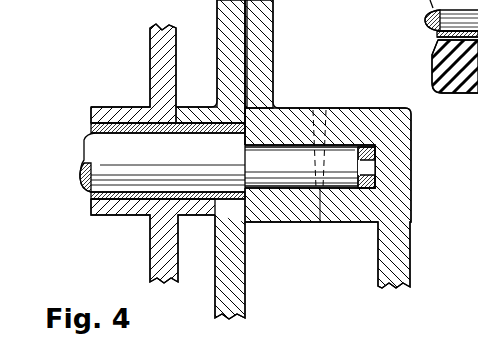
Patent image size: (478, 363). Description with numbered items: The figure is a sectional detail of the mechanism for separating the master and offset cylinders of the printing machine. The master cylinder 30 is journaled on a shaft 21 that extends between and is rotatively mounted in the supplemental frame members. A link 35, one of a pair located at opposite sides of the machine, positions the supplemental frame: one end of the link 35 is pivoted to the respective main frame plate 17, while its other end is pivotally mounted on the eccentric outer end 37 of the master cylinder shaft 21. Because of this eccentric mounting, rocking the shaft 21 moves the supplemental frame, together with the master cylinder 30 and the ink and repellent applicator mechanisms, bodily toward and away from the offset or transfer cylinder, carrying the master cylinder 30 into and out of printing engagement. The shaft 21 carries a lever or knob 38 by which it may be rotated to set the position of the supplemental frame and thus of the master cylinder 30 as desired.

The master cylinder 30 is at (153, 72).
The frame plates 17 is at (226, 43).
The link 35 is at (270, 22).
The shaft 21 is at (92, 150).
The eccentric outer end 37 is at (300, 178).
The lever or knob 38 is at (395, 232).